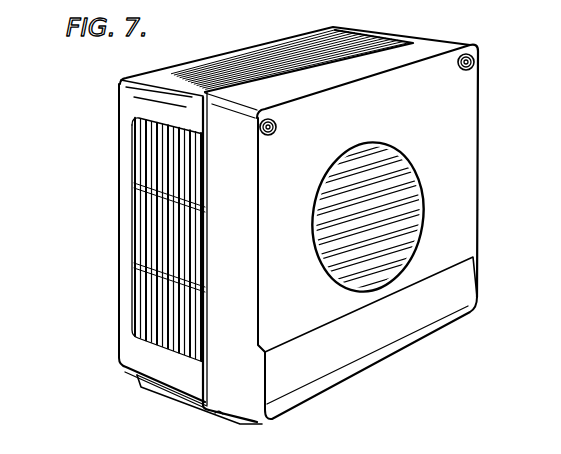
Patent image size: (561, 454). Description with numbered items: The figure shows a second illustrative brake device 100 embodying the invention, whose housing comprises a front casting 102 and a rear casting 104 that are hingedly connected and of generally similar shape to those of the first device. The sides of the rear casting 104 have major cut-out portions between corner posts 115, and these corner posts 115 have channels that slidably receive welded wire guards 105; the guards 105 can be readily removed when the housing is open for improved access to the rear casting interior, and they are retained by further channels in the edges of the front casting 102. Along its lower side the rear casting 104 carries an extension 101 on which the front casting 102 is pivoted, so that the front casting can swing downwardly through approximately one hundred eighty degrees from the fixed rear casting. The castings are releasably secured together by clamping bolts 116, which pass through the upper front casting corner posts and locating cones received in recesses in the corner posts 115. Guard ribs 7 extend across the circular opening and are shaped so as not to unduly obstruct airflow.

The brake device 100 is at (476, 241).
The extension 101 is at (155, 381).
The front casting 102 is at (407, 343).
The rear casting 104 is at (132, 102).
The welded wire guards 105 is at (152, 232).
The corner posts 115 is at (160, 69).
The clamping bolts 116 is at (456, 54).
The guard ribs 7 is at (347, 231).